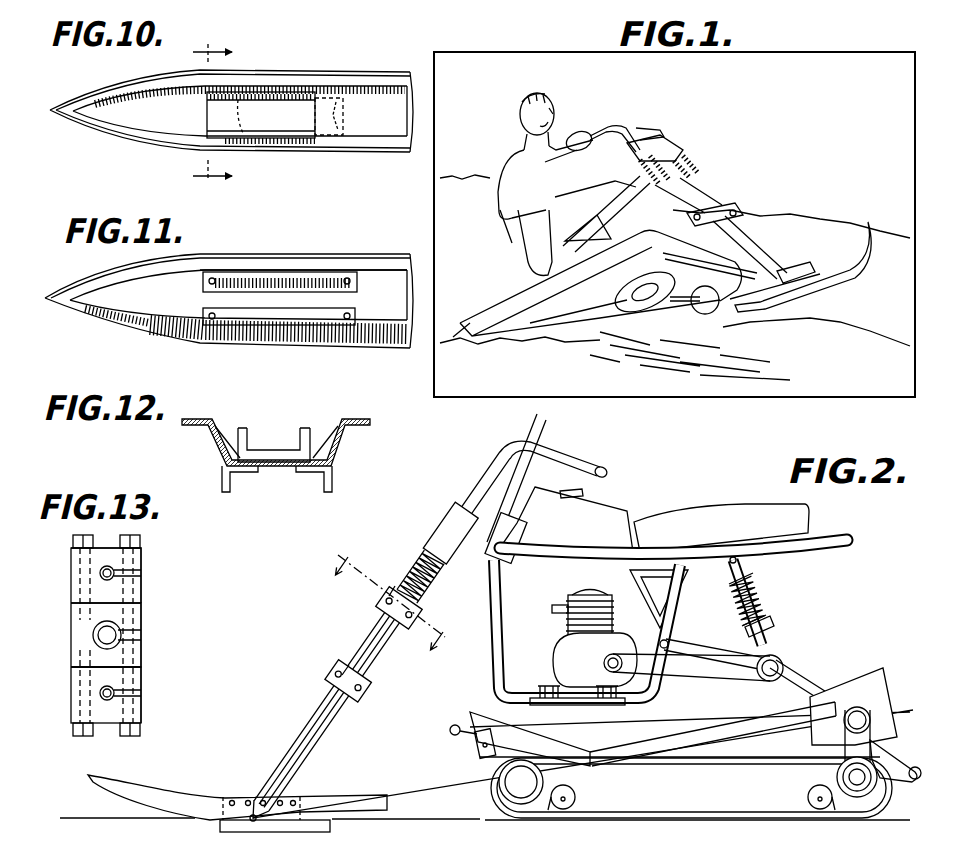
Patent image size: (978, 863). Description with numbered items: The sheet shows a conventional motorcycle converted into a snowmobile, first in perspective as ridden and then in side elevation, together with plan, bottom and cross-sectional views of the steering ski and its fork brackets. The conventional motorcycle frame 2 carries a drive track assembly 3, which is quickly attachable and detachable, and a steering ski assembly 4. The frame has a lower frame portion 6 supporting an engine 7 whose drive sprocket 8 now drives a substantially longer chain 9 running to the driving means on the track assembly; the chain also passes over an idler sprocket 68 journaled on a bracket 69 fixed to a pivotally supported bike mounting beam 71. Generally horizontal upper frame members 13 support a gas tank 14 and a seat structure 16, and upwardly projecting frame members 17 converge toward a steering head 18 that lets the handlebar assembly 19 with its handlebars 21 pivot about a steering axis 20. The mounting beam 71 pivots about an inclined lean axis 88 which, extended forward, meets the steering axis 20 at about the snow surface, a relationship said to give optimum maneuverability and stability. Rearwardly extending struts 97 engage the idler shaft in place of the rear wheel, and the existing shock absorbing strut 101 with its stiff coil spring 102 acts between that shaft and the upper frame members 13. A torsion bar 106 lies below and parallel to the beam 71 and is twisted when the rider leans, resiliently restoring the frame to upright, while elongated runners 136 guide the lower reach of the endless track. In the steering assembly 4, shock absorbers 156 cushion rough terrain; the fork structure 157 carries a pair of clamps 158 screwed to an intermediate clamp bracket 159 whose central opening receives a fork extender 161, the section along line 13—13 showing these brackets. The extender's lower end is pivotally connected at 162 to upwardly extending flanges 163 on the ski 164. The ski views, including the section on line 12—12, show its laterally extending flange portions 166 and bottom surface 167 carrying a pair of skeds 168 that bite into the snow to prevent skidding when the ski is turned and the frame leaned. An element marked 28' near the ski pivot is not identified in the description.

In FIG. 2, the motorcycle frame 2 is at (766, 596).
In FIG. 2, the drive track assembly 3 is at (860, 672).
In FIG. 2, the steering ski assembly 4 is at (386, 683).
In FIG. 2, the lower frame portion 6 is at (527, 686).
In FIG. 2, the engine 7 is at (565, 628).
In FIG. 2, the drive sprocket 8 is at (603, 662).
In FIG. 2, the chain 9 is at (686, 692).
In FIG. 10, the section line 12— 12 is at (212, 113).
In FIG. 2, the upper frame members 13 is at (670, 568).
In FIG. 2, the gas tank 14 is at (608, 514).
In FIG. 2, the seat structure 16 is at (727, 520).
In FIG. 2, the upwardly projecting frame members 17 is at (500, 592).
In FIG. 2, the steering head 18 is at (490, 528).
In FIG. 2, the handlebar assembly 19 is at (479, 472).
In FIG. 2, the steering axis 20 is at (455, 580).
In FIG. 2, the handlebars 21 is at (564, 449).
In FIG. 2, the pivot bracket 28' is at (454, 728).
In FIG. 2, the idler sprocket 68 is at (777, 663).
In FIG. 2, the bracket 69 is at (760, 694).
In FIG. 2, the bike mounting beam 71 is at (723, 733).
In FIG. 2, the lean axis 88 is at (407, 792).
In FIG. 2, the rearwardly extending struts 97 is at (696, 650).
In FIG. 2, the shock absorbing strut 101 is at (764, 638).
In FIG. 2, the coil spring 102 is at (760, 596).
In FIG. 2, the torsion bar 106 is at (761, 736).
In FIG. 2, the runner 136 is at (647, 814).
In FIG. 2, the shock absorbers 156 is at (418, 577).
In FIG. 13, the fork structure 157 is at (114, 569).
In FIG. 2, the fork structure 157 is at (392, 660).
In FIG. 13, the clamps 158 is at (137, 595).
In FIG. 13, the intermediate clamp bracket 159 is at (137, 657).
In FIG. 13, the fork extender 161 is at (116, 633).
In FIG. 2, the fork extender 161 is at (366, 644).
In FIG. 2, the pivotal connection 162 is at (258, 796).
In FIG. 10, the upwardly extending flanges 163 is at (277, 88).
In FIG. 12, the upwardly extending flanges 163 is at (303, 430).
In FIG. 10, the ski 164 is at (357, 62).
In FIG. 11, the ski 164 is at (101, 336).
In FIG. 12, the ski 164 is at (214, 418).
In FIG. 2, the ski 164 is at (181, 792).
In FIG. 10, the laterally extending flange portions 166 is at (290, 165).
In FIG. 11, the laterally extending flange portions 166 is at (340, 256).
In FIG. 12, the laterally extending flange portions 166 is at (355, 429).
In FIG. 11, the bottom surface 167 is at (377, 312).
In FIG. 12, the bottom surface 167 is at (258, 474).
In FIG. 11, the skeds 168 is at (246, 320).
In FIG. 12, the skeds 168 is at (318, 479).